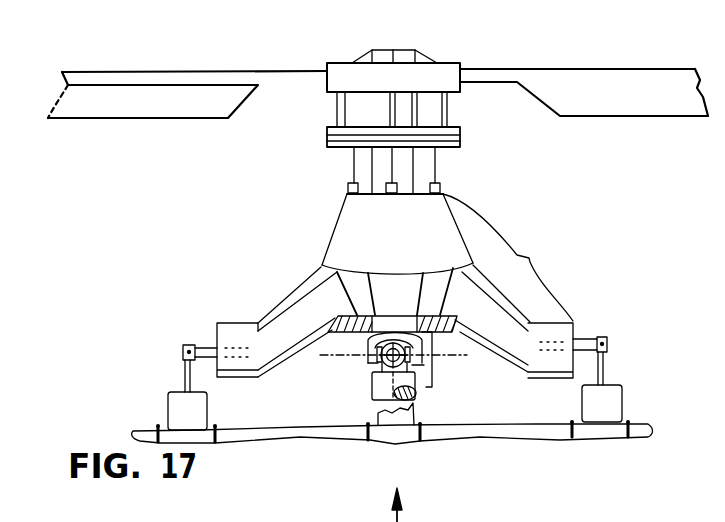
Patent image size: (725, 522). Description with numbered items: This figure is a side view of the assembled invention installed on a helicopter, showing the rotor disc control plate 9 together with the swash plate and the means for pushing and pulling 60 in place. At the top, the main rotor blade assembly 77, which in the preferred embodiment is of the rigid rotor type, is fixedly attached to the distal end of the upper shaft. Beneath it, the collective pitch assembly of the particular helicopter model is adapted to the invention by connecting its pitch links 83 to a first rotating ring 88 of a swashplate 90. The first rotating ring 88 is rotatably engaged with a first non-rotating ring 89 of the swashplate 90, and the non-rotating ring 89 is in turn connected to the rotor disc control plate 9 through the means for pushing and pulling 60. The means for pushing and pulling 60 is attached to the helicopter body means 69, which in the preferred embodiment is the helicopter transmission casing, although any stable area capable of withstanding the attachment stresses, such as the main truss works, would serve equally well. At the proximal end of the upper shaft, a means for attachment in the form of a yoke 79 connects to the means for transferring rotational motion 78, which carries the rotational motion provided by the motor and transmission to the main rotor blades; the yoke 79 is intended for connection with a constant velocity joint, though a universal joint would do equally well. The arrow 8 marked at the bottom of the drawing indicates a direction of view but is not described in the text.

The main rotor blade assembly 77 is at (398, 62).
The pitch links 83 is at (447, 112).
The first rotating ring 88 is at (463, 131).
The first non-rotating ring 89 is at (462, 142).
The swashplate 90 is at (375, 138).
The means for pushing and pulling 60 is at (176, 421).
The rotor disc control plate 9 is at (395, 286).
The means for transferring rotational motion 78 is at (393, 370).
The yoke 79 is at (366, 358).
The helicopter body means 69 is at (535, 426).
The direction arrow 8 is at (395, 491).